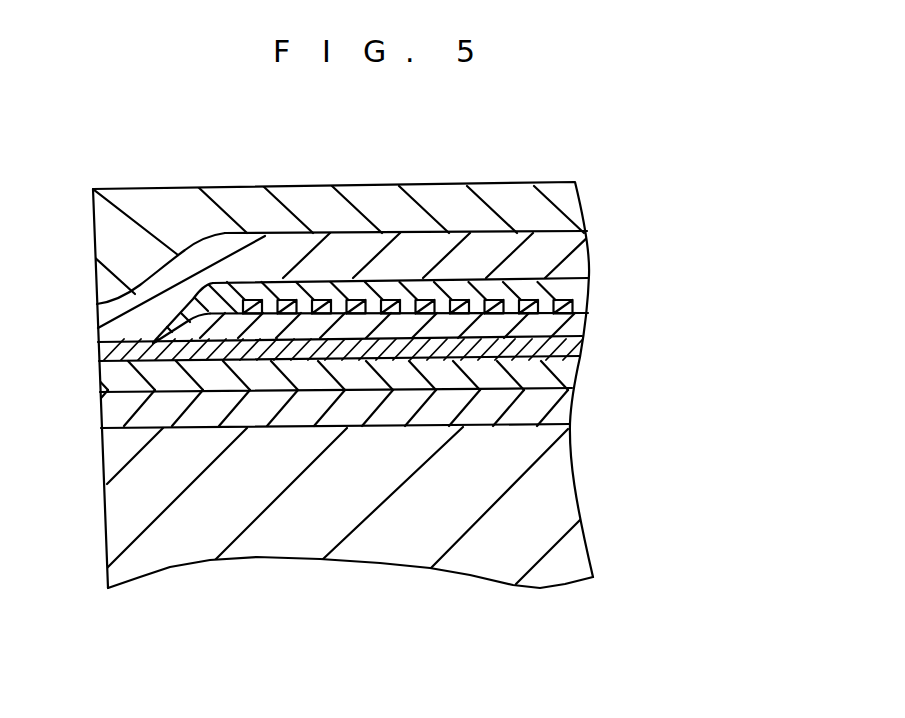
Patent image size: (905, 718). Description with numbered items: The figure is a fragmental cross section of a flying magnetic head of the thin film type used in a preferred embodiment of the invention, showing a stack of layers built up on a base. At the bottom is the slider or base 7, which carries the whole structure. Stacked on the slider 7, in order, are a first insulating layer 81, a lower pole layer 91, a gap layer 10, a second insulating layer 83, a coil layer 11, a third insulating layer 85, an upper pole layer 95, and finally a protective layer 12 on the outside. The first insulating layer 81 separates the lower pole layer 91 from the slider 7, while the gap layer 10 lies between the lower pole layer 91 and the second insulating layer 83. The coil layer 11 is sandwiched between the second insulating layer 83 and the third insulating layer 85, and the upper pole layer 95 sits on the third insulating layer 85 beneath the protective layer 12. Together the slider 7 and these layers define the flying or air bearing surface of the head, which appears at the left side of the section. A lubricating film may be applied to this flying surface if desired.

The slider 7 is at (388, 551).
The gap layer 10 is at (117, 343).
The coil layer 11 is at (252, 298).
The protective layer 12 is at (512, 203).
The first insulating layer 81 is at (557, 412).
The second insulating layer 83 is at (563, 322).
The third insulating layer 85 is at (577, 283).
The lower pole layer 91 is at (547, 373).
The upper pole layer 95 is at (577, 245).